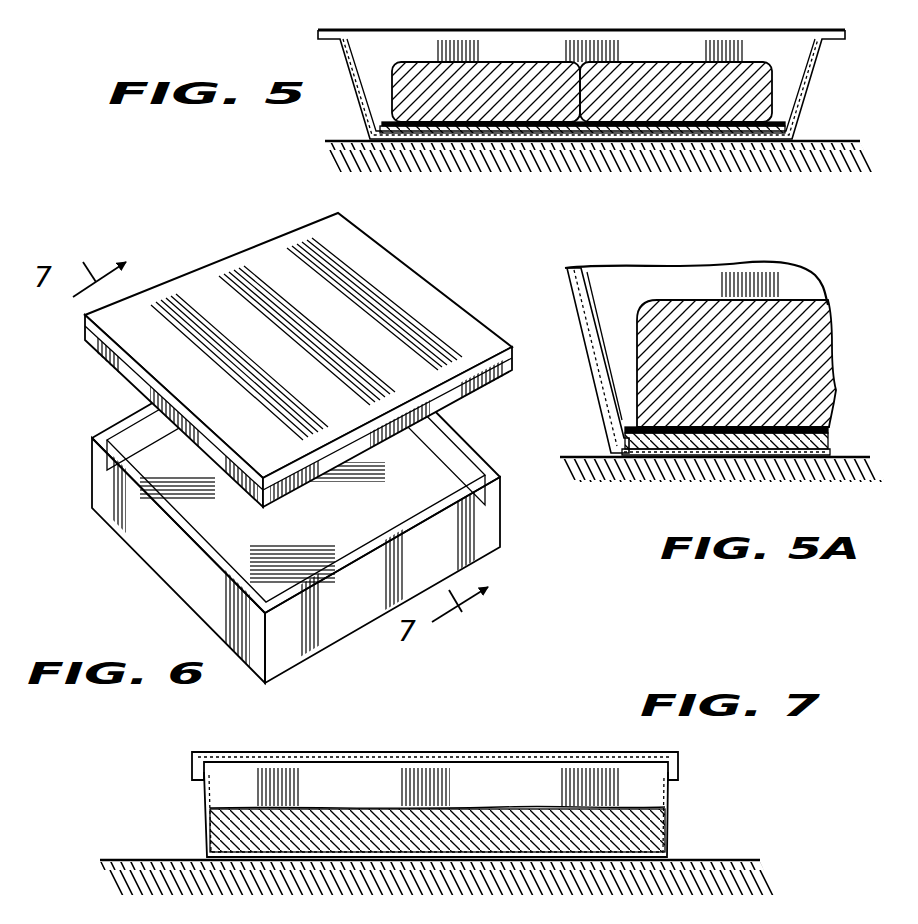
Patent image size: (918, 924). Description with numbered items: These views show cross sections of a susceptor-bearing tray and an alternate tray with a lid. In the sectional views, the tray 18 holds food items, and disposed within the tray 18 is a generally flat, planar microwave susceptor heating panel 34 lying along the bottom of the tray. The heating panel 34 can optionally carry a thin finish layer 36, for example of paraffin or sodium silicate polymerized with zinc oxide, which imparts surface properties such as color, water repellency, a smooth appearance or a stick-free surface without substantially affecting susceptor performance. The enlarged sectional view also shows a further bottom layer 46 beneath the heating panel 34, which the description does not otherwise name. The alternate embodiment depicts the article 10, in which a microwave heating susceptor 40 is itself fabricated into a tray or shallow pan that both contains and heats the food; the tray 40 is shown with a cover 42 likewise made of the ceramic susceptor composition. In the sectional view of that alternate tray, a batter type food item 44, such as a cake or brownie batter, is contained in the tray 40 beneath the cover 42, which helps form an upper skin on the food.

In FIG. 6, the article 10 is at (120, 404).
In FIG. 5, the tray 18 is at (343, 50).
In FIG. 5A, the tray 18 is at (574, 301).
In FIG. 5, the microwave susceptor heating panel 34 is at (657, 134).
In FIG. 5A, the microwave susceptor heating panel 34 is at (664, 449).
In FIG. 5, the finish layer 36 is at (402, 104).
In FIG. 5A, the finish layer 36 is at (736, 363).
In FIG. 6, the microwave heating susceptor 40 is at (168, 560).
In FIG. 7, the microwave heating susceptor 40 is at (672, 826).
In FIG. 6, the cover 42 is at (384, 262).
In FIG. 7, the cover 42 is at (470, 752).
In FIG. 7, the batter type food item 44 is at (208, 828).
In FIG. 5A, the bottom pad layer 46 is at (801, 452).